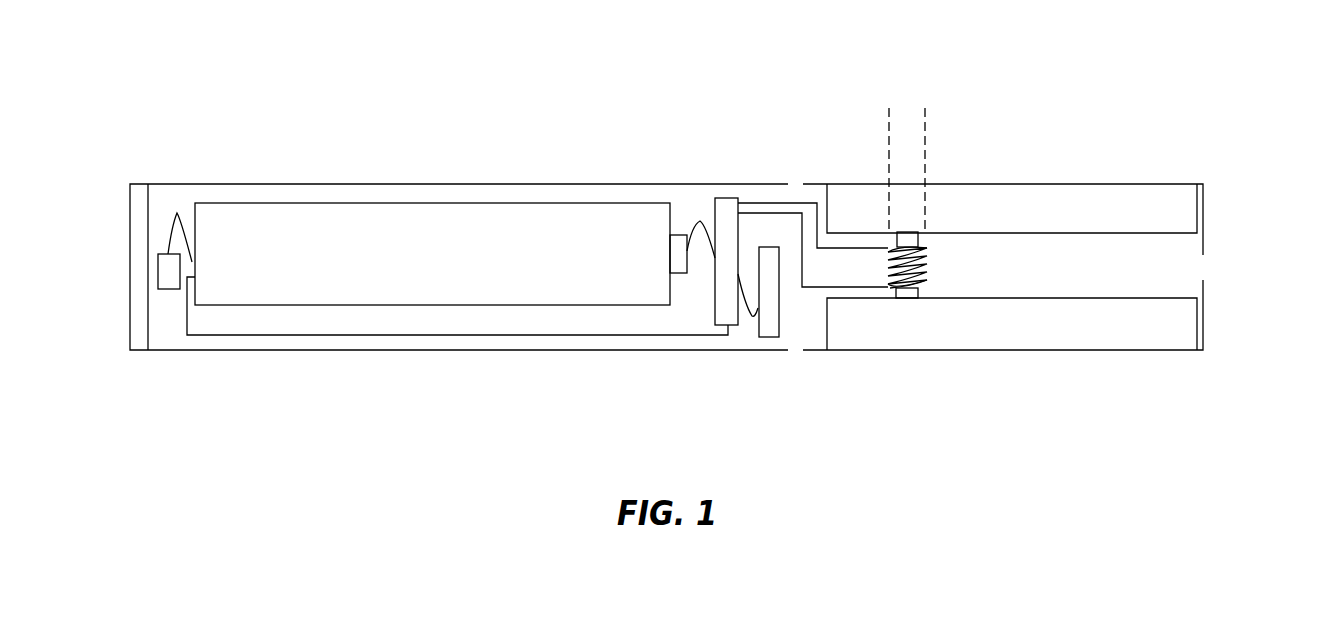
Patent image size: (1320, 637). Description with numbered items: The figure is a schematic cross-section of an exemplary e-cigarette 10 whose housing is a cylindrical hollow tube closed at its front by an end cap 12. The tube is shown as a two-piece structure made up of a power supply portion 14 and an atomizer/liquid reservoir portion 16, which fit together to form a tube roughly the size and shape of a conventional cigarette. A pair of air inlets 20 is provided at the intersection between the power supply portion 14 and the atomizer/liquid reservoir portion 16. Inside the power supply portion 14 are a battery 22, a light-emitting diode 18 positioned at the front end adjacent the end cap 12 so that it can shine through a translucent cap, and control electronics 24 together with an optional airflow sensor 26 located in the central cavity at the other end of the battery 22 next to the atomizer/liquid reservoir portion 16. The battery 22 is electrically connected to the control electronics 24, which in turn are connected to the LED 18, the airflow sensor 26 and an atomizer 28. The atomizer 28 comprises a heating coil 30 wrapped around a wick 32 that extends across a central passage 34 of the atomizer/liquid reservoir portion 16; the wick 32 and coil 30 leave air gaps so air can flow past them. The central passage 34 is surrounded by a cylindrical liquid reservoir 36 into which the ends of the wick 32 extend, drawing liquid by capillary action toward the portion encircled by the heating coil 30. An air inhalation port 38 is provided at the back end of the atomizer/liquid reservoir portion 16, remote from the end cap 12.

The e-cigarette 10 is at (580, 55).
The end cap 12 is at (142, 334).
The power supply portion 14 is at (790, 152).
The atomizer/liquid reservoir portion 16 is at (1203, 157).
The light-emitting diode 18 is at (170, 278).
The air inlets 20 is at (797, 184).
The battery 22 is at (350, 283).
The control electronics 24 is at (727, 198).
The airflow sensor 26 is at (770, 323).
The atomizer 28 is at (925, 108).
The heating coil 30 is at (923, 283).
The wick 32 is at (908, 293).
The central passage 34 is at (1012, 283).
The cylindrical liquid reservoir 36 is at (1174, 207).
The air inhalation port 38 is at (1202, 267).